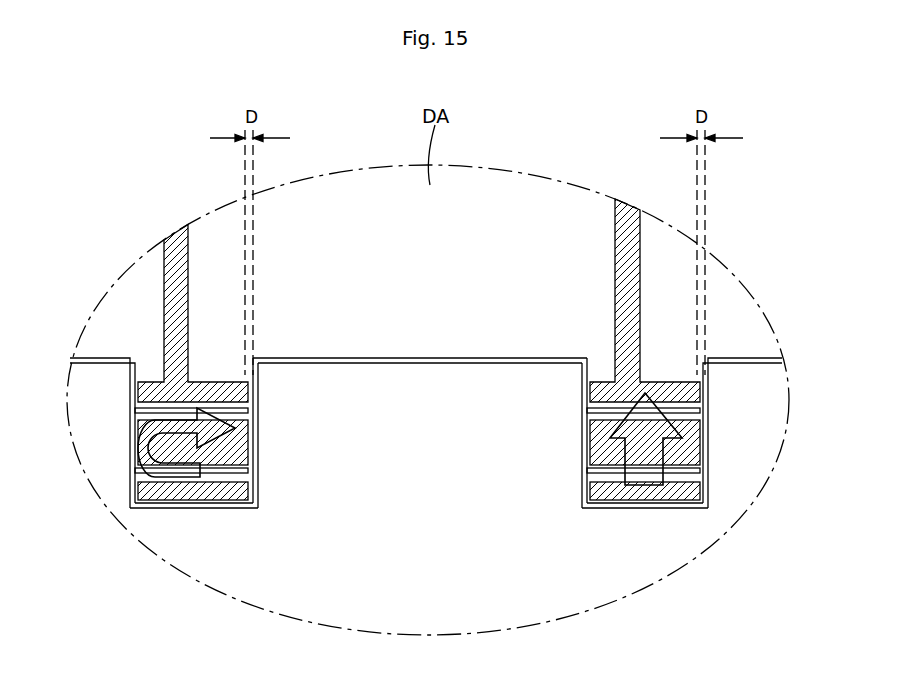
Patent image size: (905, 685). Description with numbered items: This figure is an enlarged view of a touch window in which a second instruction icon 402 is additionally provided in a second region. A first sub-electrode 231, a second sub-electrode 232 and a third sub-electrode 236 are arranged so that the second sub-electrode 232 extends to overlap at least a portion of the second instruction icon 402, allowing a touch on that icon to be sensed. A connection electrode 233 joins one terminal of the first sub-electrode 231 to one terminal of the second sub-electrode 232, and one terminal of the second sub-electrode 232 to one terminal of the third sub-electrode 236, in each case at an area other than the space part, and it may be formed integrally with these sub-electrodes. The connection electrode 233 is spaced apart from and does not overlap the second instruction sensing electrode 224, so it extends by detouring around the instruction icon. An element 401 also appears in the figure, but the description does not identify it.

The second instruction sensing electrode 224 is at (157, 380).
The first sub-electrode 231 is at (133, 425).
The second sub-electrode 232 is at (258, 440).
The connection electrode 233 is at (203, 510).
The third sub-electrode 236 is at (707, 423).
The circulating flow arrow 401 is at (133, 487).
The second instruction icon 402 is at (643, 490).